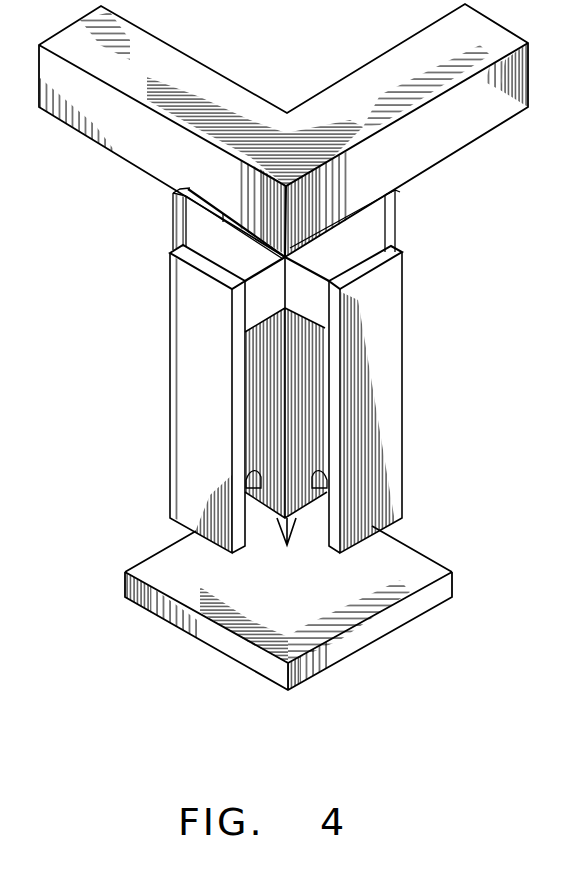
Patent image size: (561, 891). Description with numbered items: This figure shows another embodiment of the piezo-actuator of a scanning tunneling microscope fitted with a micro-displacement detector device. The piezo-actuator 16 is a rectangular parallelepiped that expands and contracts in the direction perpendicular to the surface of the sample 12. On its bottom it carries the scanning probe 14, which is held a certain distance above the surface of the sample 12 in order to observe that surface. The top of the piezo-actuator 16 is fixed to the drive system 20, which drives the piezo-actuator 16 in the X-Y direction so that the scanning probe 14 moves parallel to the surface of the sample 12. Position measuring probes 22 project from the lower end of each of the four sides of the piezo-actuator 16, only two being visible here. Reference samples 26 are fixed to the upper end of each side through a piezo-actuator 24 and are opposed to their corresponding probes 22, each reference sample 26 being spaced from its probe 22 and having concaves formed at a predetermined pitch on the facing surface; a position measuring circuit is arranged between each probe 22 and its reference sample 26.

The sample 12 is at (415, 560).
The scanning probe 14 is at (282, 532).
The piezo-actuator 16 is at (310, 408).
The drive system 20 is at (182, 72).
The position measuring probes 22 is at (248, 472).
The piezo-actuator 24 is at (215, 217).
The reference samples 26 is at (173, 199).